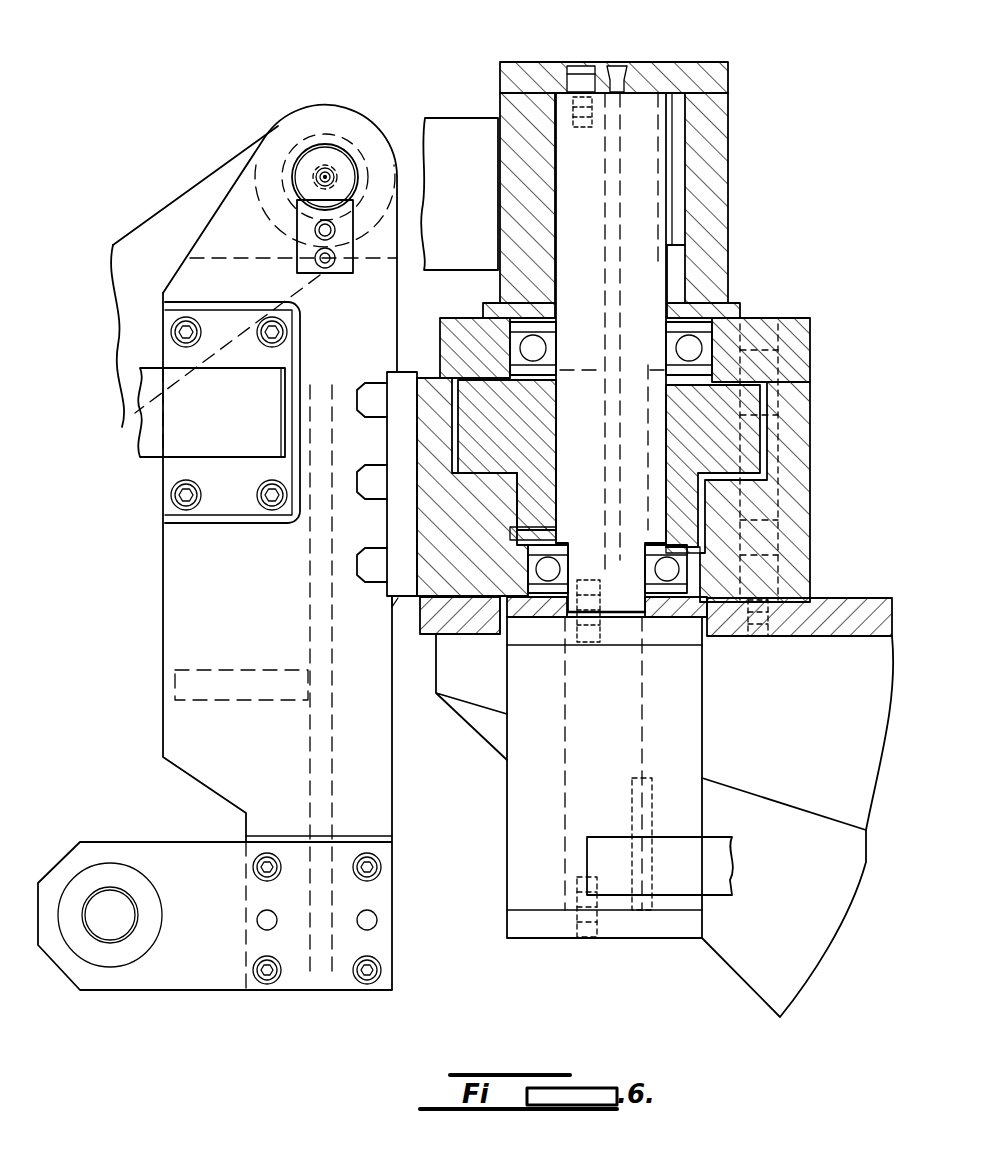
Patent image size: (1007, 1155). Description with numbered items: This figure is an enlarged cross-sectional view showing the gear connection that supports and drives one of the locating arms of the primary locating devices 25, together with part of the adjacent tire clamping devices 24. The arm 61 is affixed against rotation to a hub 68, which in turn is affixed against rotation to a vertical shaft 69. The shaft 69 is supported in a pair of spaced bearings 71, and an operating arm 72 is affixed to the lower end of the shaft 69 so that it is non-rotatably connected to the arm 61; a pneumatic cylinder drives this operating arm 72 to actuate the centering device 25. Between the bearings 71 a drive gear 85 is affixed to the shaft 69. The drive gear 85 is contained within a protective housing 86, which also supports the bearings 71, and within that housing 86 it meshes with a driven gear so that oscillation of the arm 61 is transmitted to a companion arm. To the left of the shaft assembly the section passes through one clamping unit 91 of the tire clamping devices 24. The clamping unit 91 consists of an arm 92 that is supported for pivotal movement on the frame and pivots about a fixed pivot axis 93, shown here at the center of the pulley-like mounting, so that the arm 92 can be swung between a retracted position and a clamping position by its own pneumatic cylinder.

The tire clamping devices 24 is at (210, 155).
The primary locating devices 25 is at (427, 104).
The arm 61 is at (447, 118).
The hub 68 is at (728, 170).
The shaft 69 is at (672, 273).
The bearings 71 is at (713, 343).
The operating arm 72 is at (522, 808).
The drive gear 85 is at (760, 447).
The protective housing 86 is at (810, 403).
The clamping unit 91 is at (145, 594).
The arm 92 is at (140, 232).
The fixed pivot axis 93 is at (326, 172).